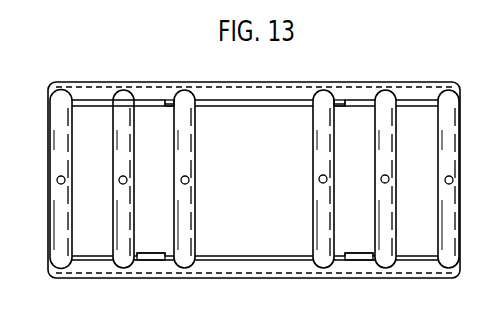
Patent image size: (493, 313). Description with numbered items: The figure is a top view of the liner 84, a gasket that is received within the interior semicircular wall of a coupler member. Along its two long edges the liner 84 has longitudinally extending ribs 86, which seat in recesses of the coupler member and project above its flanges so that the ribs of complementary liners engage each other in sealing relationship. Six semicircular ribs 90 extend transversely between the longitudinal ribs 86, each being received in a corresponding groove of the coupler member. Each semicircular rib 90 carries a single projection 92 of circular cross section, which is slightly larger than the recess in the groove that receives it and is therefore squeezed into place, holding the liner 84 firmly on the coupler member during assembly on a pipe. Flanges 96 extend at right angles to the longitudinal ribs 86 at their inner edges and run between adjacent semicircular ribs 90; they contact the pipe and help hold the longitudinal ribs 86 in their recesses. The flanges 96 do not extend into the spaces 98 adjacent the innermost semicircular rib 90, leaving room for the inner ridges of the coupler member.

The liner 84 is at (267, 83).
The longitudinally extending ribs 86 is at (205, 92).
The semicircular ribs 90 is at (196, 161).
The projection 92 is at (57, 180).
The flanges 96 is at (92, 108).
The spaces 98 is at (340, 108).